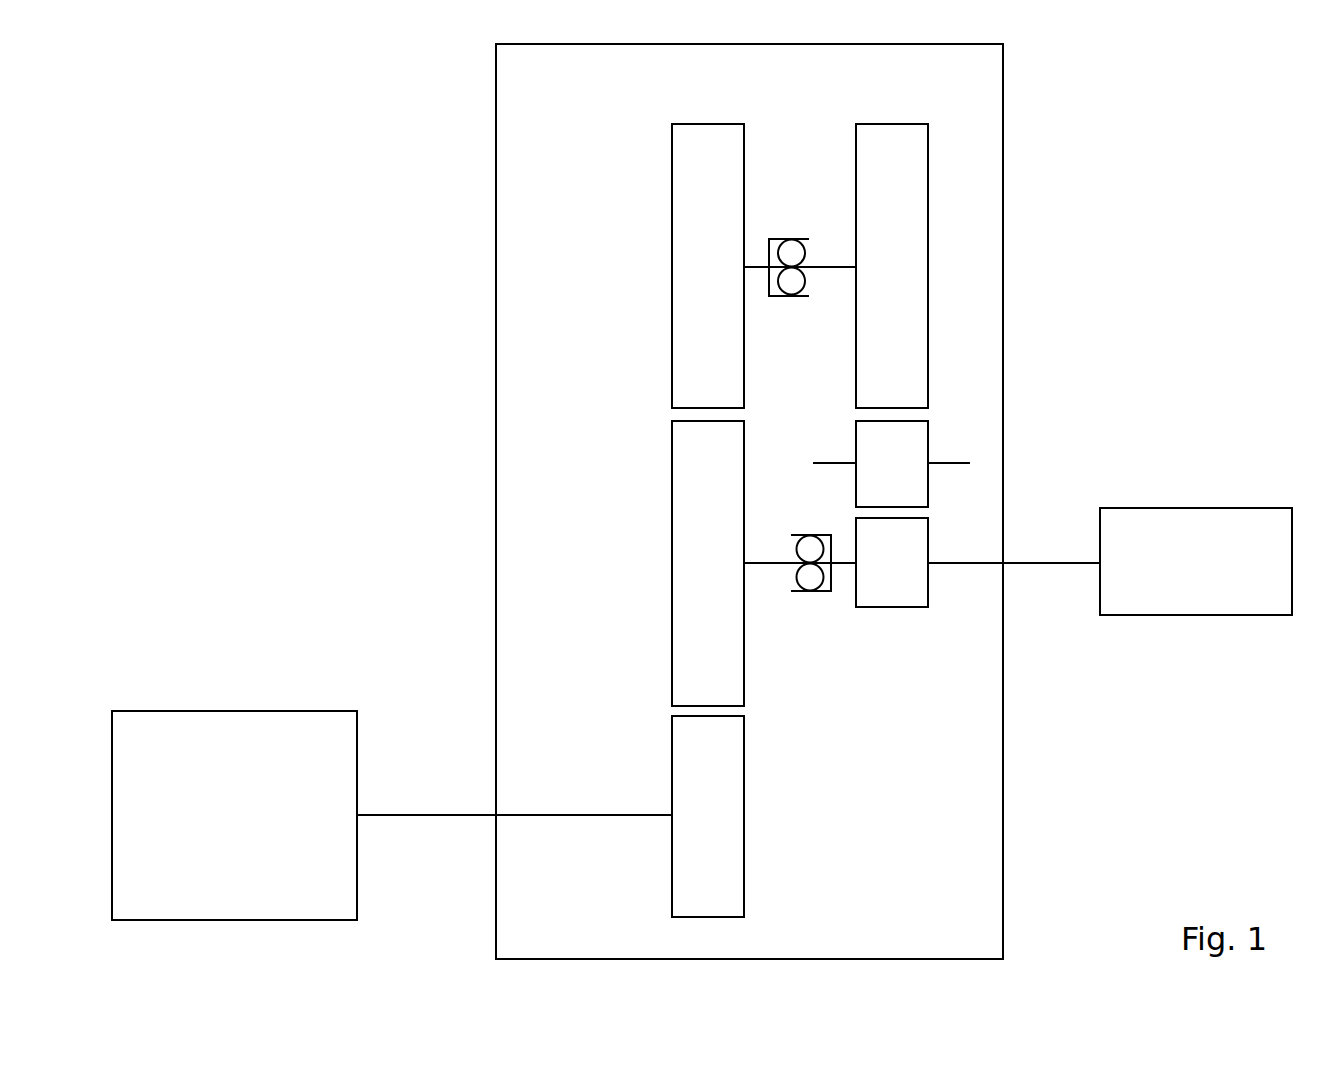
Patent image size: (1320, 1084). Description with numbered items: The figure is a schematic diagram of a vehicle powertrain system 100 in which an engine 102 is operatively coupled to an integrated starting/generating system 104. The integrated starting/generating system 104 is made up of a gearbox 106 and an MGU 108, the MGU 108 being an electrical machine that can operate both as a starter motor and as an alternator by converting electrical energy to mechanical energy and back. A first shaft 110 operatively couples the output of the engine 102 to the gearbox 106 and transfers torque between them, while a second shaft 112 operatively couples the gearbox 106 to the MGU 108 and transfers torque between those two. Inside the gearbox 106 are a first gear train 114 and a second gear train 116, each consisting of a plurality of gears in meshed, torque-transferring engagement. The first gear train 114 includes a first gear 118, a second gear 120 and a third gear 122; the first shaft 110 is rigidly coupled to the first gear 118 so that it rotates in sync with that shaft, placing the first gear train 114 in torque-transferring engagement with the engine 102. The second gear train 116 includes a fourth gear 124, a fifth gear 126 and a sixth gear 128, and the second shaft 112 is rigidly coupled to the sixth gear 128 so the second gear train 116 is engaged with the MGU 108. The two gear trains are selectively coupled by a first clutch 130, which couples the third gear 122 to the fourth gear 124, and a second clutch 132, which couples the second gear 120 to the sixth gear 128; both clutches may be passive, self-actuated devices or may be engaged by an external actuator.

The vehicle powertrain system 100 is at (184, 406).
The engine 102 is at (217, 836).
The integrated starting/generating system 104 is at (1190, 304).
The gearbox 106 is at (817, 72).
The MGU 108 is at (1178, 584).
The first shaft 110 is at (459, 814).
The second shaft 112 is at (1019, 561).
The first gear train 114 is at (694, 113).
The second gear train 116 is at (888, 112).
The first gear 118 is at (725, 827).
The second gear 120 is at (725, 575).
The third gear 122 is at (725, 277).
The fourth gear 124 is at (909, 277).
The fifth gear 126 is at (909, 475).
The sixth gear 128 is at (909, 575).
The first clutch 130 is at (792, 239).
The second clutch 132 is at (808, 592).